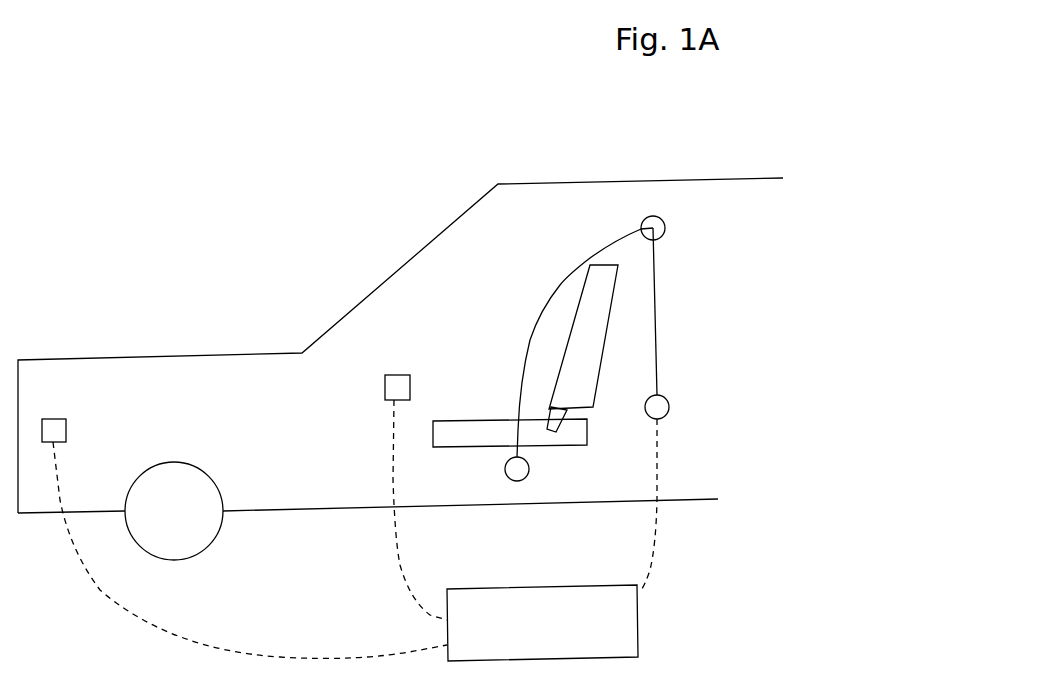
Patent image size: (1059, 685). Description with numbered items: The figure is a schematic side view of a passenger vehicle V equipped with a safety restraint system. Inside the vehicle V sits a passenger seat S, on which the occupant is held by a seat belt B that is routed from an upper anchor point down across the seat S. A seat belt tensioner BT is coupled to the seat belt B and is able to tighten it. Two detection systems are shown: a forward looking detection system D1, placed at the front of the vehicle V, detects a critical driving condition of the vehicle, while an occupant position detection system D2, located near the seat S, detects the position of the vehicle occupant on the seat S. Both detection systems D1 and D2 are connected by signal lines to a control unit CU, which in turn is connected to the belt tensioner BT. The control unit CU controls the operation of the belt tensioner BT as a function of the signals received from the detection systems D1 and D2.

The passenger vehicle V is at (366, 274).
The seat S is at (600, 350).
The seat belt B is at (561, 281).
The seat belt tensioner BT is at (669, 408).
The forward looking detection system D1 is at (66, 432).
The occupant position detection system D2 is at (405, 383).
The control unit CU is at (559, 623).